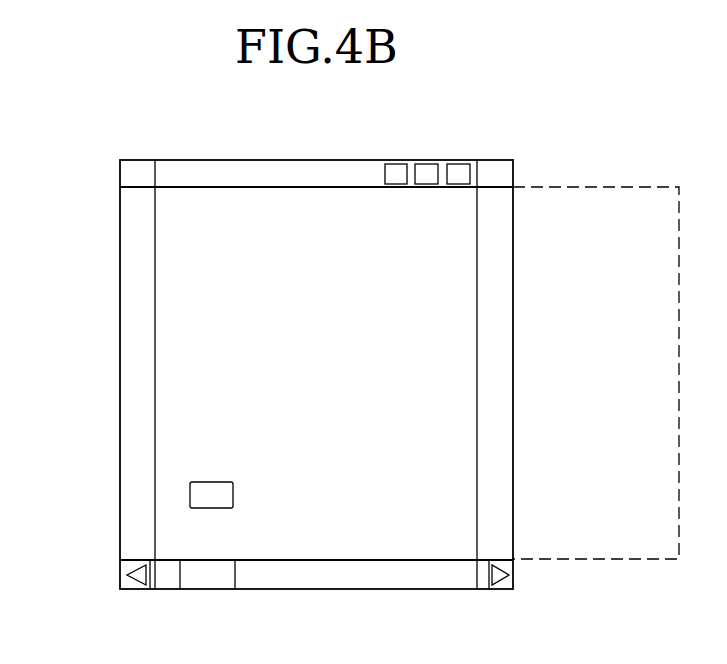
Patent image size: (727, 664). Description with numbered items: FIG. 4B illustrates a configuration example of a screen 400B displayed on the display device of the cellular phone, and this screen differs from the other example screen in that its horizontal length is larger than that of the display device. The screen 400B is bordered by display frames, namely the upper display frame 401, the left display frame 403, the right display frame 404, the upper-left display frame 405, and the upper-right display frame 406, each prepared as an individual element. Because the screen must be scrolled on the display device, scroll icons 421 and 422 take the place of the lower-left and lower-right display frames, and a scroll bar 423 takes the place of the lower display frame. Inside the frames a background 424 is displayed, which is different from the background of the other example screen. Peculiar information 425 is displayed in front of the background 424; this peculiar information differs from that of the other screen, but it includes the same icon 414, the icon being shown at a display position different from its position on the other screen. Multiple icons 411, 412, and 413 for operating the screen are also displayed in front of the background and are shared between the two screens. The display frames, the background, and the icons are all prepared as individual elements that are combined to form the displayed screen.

The screen 400B is at (528, 146).
The display frame 401 is at (307, 160).
The display frame 403 is at (135, 360).
The display frame 404 is at (500, 381).
The display frame 405 is at (131, 172).
The display frame 406 is at (502, 173).
The icon 411 is at (395, 188).
The icon 412 is at (420, 188).
The icon 413 is at (455, 188).
The icon 414 is at (190, 495).
The scroll icon 421 is at (128, 580).
The scroll icon 422 is at (516, 581).
The scroll bar 423 is at (328, 578).
The background 424 is at (430, 470).
The peculiar information 425 is at (405, 295).